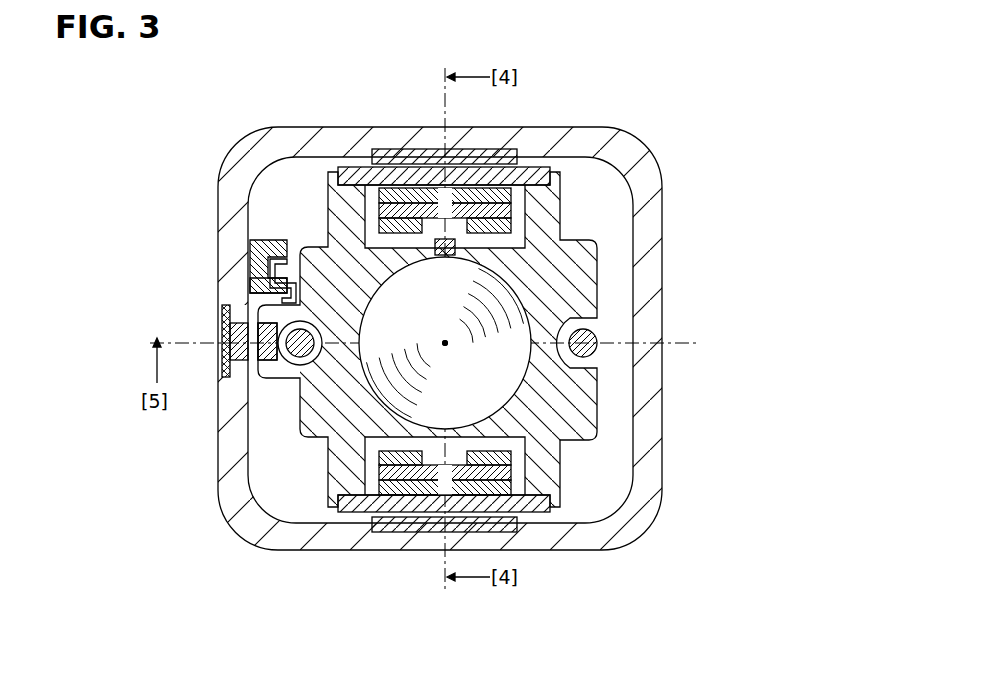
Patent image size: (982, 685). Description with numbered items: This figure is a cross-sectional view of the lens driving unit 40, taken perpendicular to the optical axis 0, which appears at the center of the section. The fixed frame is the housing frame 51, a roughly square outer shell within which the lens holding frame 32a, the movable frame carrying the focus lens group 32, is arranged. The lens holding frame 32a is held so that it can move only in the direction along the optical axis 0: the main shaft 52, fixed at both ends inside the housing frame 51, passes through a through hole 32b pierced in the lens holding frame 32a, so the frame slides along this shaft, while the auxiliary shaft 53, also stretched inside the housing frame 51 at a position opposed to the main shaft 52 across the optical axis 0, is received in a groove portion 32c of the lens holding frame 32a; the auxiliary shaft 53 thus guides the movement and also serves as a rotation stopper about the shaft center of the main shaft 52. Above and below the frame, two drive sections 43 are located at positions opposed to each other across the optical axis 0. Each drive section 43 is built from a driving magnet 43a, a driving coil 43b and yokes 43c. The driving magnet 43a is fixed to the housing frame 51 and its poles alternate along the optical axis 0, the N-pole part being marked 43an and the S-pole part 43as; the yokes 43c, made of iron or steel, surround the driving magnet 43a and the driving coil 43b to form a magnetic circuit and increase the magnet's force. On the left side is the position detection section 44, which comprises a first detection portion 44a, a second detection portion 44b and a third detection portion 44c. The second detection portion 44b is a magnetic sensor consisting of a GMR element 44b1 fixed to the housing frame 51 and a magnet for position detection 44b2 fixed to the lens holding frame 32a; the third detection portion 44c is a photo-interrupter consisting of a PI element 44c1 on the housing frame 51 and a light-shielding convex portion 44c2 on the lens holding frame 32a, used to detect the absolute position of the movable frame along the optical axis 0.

The lens driving unit 40 is at (745, 160).
The housing frame 51 is at (652, 440).
The focus lens group 32 is at (436, 339).
The lens holding frame 32a is at (580, 268).
The through hole 32b is at (300, 365).
The groove portion 32c is at (495, 332).
The optical axis 0 is at (447, 346).
The main shaft 52 is at (278, 378).
The auxiliary shaft 53 is at (597, 333).
The drive section 43 is at (586, 328).
The driving magnet 43a is at (590, 304).
The N-pole part of driving magnet 43an is at (512, 195).
The S-pole part of driving magnet 43as is at (512, 210).
The driving coil 43b is at (533, 167).
The yokes 43c is at (486, 222).
The position detection section 44 is at (181, 260).
The first detection portion 44a is at (262, 243).
The second detection portion 44b is at (191, 321).
The GMR element 44b1 is at (224, 312).
The magnet for position detection 44b2 is at (264, 330).
The third detection portion 44c is at (200, 242).
The PI element 44c1 is at (264, 288).
The light-shielding convex portion 44c2 is at (271, 258).